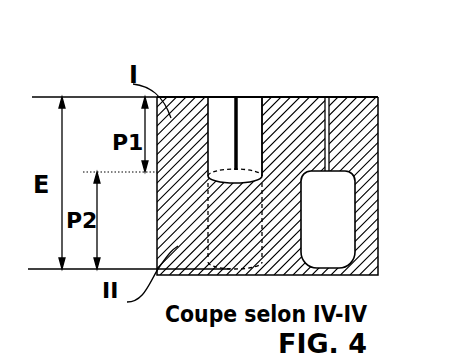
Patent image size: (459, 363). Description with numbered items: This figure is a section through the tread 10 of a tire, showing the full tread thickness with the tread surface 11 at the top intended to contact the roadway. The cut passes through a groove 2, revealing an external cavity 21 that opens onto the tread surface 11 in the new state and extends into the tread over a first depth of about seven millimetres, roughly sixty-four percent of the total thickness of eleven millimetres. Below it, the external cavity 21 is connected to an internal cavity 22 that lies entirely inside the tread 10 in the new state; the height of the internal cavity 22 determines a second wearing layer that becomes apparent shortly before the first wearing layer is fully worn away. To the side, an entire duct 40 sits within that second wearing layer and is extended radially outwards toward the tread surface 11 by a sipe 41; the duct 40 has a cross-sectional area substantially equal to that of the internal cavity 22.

The groove 2 is at (222, 112).
The tread 10 is at (355, 147).
The tread surface 11 is at (341, 86).
The external cavity 21 is at (254, 110).
The internal cavity 22 is at (233, 236).
The duct 40 is at (338, 232).
The sipe 41 is at (327, 97).